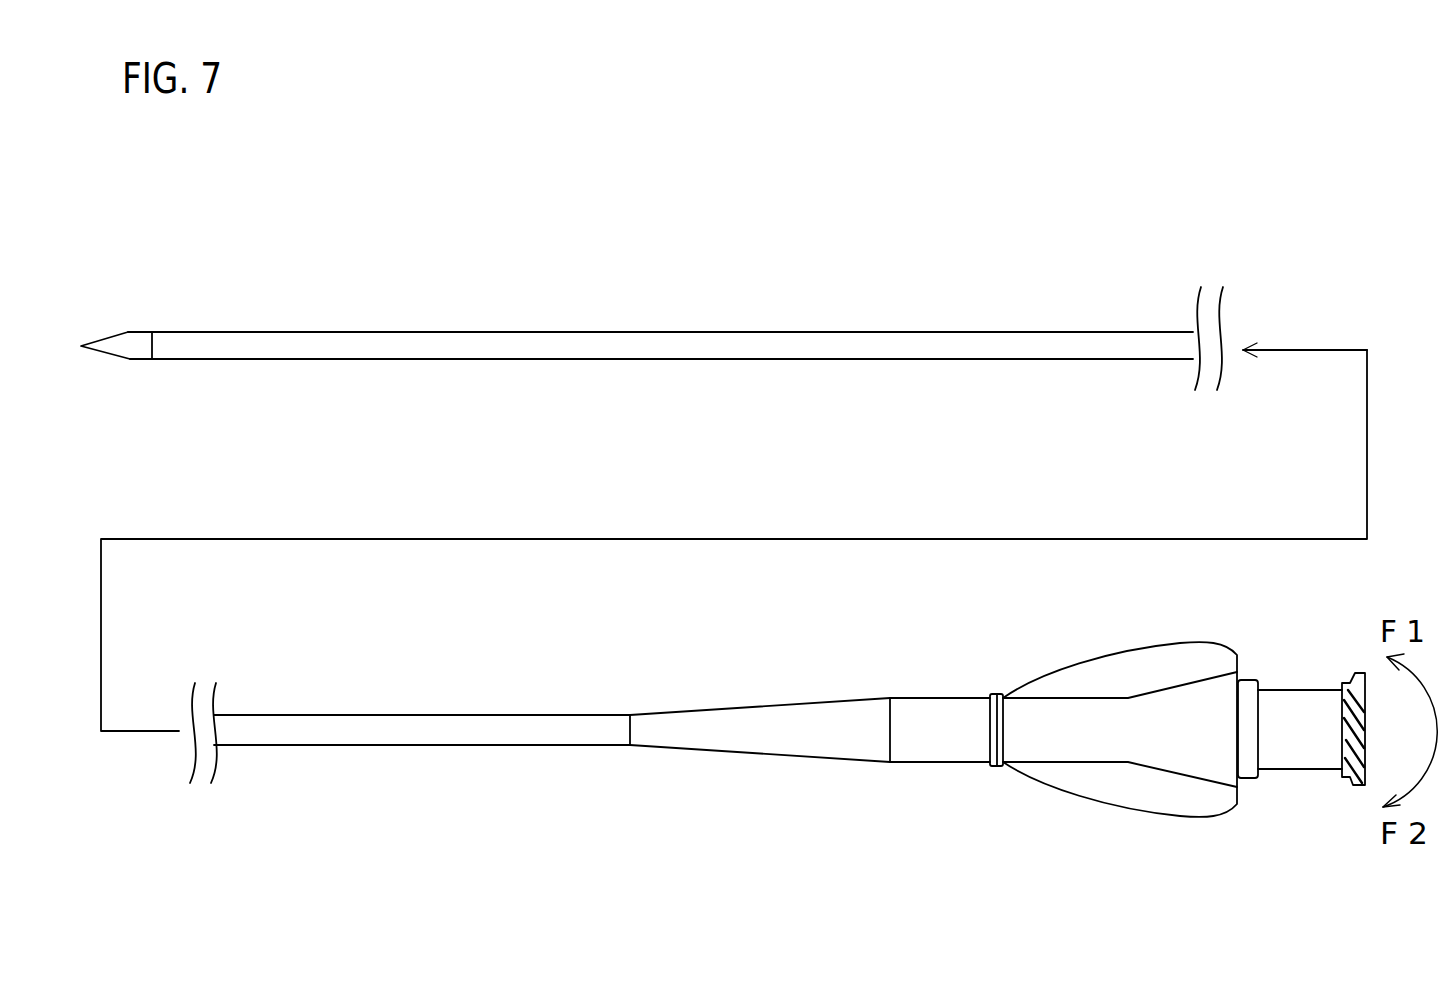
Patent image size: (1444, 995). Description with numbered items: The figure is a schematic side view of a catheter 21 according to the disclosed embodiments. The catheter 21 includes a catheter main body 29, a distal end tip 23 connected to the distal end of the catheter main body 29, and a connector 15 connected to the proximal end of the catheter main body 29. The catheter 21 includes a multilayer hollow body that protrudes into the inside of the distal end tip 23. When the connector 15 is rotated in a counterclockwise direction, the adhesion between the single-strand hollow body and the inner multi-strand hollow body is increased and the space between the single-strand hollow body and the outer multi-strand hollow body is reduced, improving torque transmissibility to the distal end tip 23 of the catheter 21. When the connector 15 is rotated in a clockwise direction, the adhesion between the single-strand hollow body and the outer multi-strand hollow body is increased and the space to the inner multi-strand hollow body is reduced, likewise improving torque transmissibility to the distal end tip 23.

The connector 15 is at (948, 713).
The catheter 21 is at (660, 698).
The distal end tip 23 is at (138, 343).
The catheter main body 29 is at (935, 322).